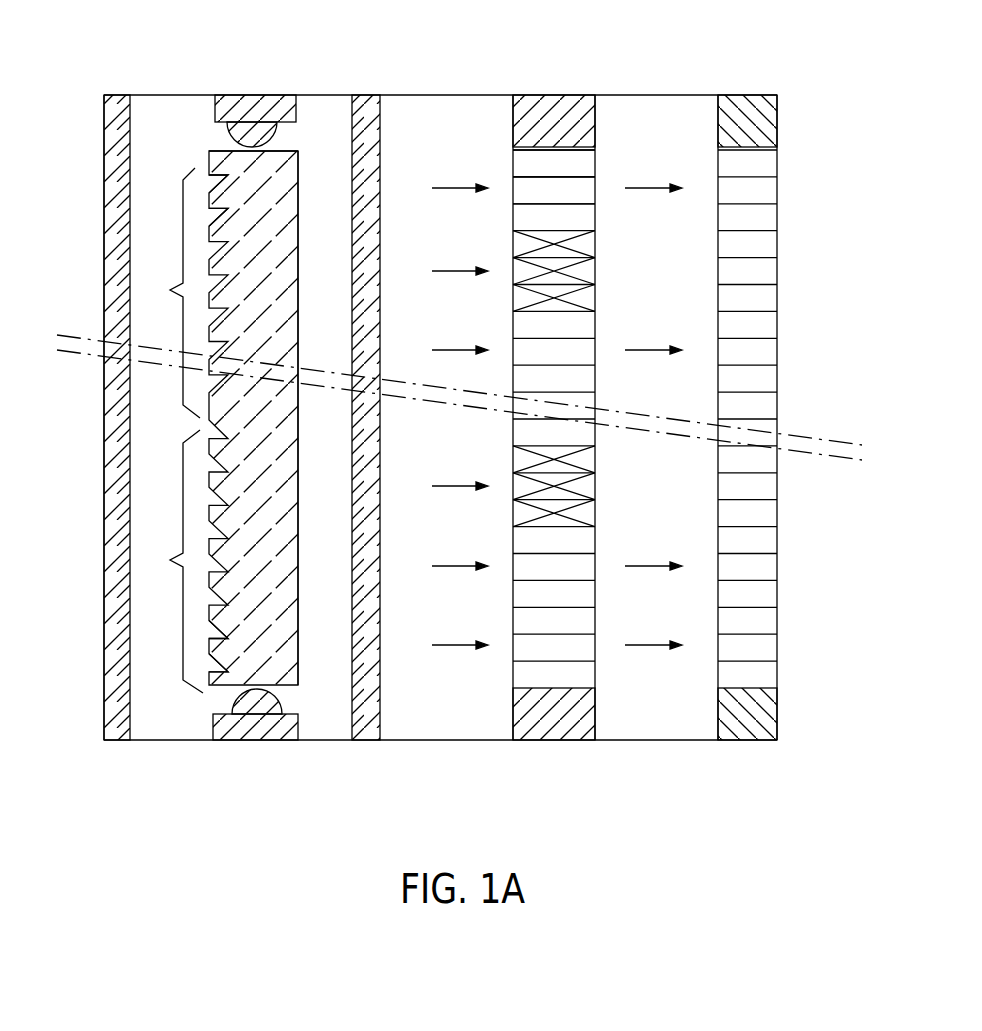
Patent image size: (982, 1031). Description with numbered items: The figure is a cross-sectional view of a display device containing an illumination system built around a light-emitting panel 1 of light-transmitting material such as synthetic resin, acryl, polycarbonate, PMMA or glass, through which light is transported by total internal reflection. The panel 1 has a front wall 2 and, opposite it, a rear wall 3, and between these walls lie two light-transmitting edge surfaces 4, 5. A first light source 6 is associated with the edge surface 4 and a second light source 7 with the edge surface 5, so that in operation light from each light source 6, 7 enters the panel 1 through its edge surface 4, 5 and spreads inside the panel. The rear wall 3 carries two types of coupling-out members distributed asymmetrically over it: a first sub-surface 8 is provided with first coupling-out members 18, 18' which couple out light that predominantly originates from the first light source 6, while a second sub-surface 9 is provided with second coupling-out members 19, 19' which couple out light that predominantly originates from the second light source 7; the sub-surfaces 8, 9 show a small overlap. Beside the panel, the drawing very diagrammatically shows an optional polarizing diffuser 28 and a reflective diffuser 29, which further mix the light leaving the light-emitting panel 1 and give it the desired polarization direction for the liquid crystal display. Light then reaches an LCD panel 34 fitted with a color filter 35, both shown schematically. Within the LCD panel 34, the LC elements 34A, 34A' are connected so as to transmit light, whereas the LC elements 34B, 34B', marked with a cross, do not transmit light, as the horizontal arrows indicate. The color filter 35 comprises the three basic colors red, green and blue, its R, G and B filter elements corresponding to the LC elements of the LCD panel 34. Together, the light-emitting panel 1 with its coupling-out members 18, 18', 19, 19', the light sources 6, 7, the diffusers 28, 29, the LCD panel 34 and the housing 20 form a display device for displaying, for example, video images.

The light-emitting panel 1 is at (270, 302).
The front wall 2 is at (288, 645).
The rear wall 3 is at (210, 162).
The edge surface 4 is at (280, 160).
The edge surface 5 is at (290, 671).
The light source 6 is at (270, 134).
The light source 7 is at (250, 704).
The first sub-surface 8 is at (147, 571).
The second sub-surface 9 is at (147, 299).
The first coupling-out member 18 is at (238, 665).
The first coupling-out member 18' is at (241, 631).
The second coupling-out member 19 is at (238, 188).
The second coupling-out member 19' is at (241, 218).
The housing 20 is at (470, 742).
The diffuser 28 is at (362, 122).
The reflective diffuser 29 is at (127, 659).
The LCD panel 34 is at (573, 376).
The LC element 34A is at (539, 109).
The LC element 34A' is at (526, 108).
The LC element 34B is at (588, 244).
The LC element 34B' is at (591, 271).
The color filter 35 is at (788, 151).